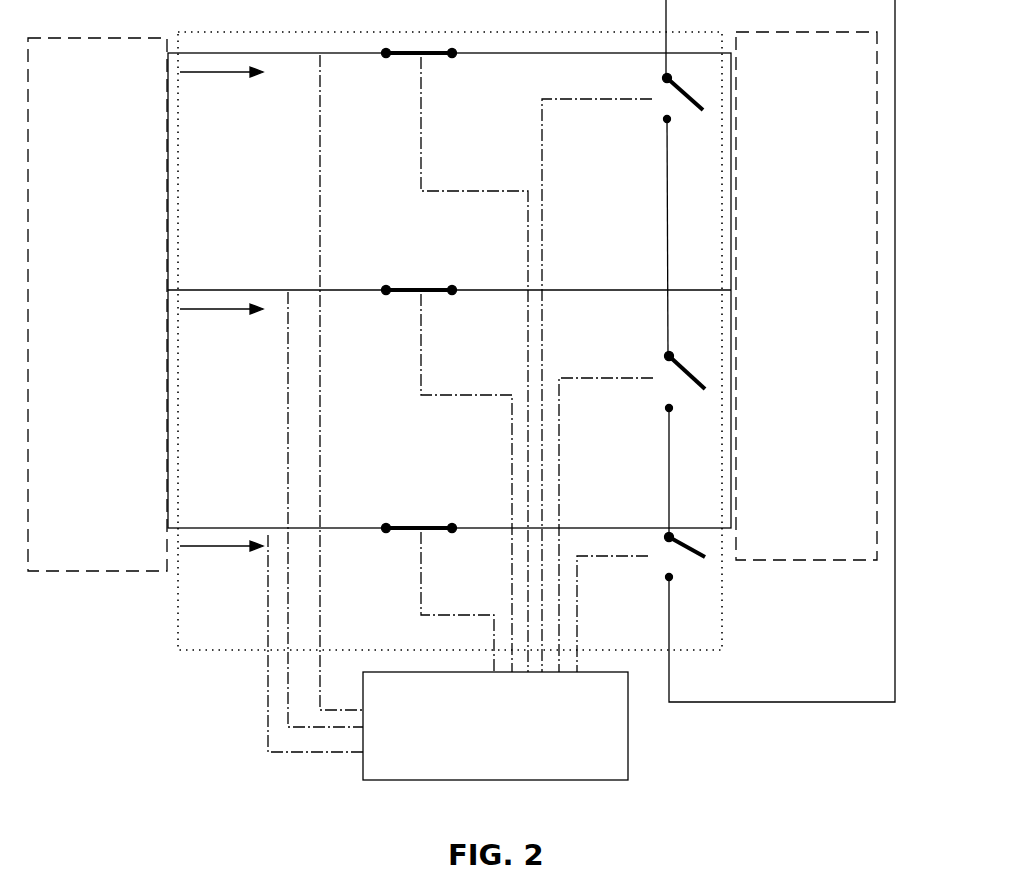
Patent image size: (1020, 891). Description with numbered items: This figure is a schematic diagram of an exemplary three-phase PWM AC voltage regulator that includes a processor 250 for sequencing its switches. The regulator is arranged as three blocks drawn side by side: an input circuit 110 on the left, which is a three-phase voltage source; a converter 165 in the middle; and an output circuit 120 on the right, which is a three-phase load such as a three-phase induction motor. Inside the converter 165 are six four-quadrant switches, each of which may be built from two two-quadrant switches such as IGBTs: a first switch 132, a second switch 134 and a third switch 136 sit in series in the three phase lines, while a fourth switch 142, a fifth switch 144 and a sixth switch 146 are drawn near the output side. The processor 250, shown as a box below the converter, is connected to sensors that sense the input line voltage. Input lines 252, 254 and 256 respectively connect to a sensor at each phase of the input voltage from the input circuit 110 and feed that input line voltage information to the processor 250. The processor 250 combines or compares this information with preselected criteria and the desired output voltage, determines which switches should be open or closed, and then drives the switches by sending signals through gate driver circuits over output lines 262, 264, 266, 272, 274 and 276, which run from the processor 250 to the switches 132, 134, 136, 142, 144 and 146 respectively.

The input circuit 110 is at (128, 62).
The output circuit 120 is at (838, 60).
The converter 165 is at (536, 31).
The processor 250 is at (513, 744).
The switch s1 132 is at (451, 57).
The switch s2 134 is at (451, 294).
The switch s3 136 is at (451, 532).
The switch s4 142 is at (704, 114).
The switch s5 144 is at (704, 393).
The switch s6 146 is at (705, 560).
The input line 252 is at (316, 165).
The input line 254 is at (286, 402).
The input line 256 is at (268, 600).
The output line 262 is at (420, 134).
The output line 264 is at (420, 360).
The output line 266 is at (424, 585).
The output line 272 is at (542, 166).
The output line 274 is at (560, 446).
The output line 276 is at (577, 613).